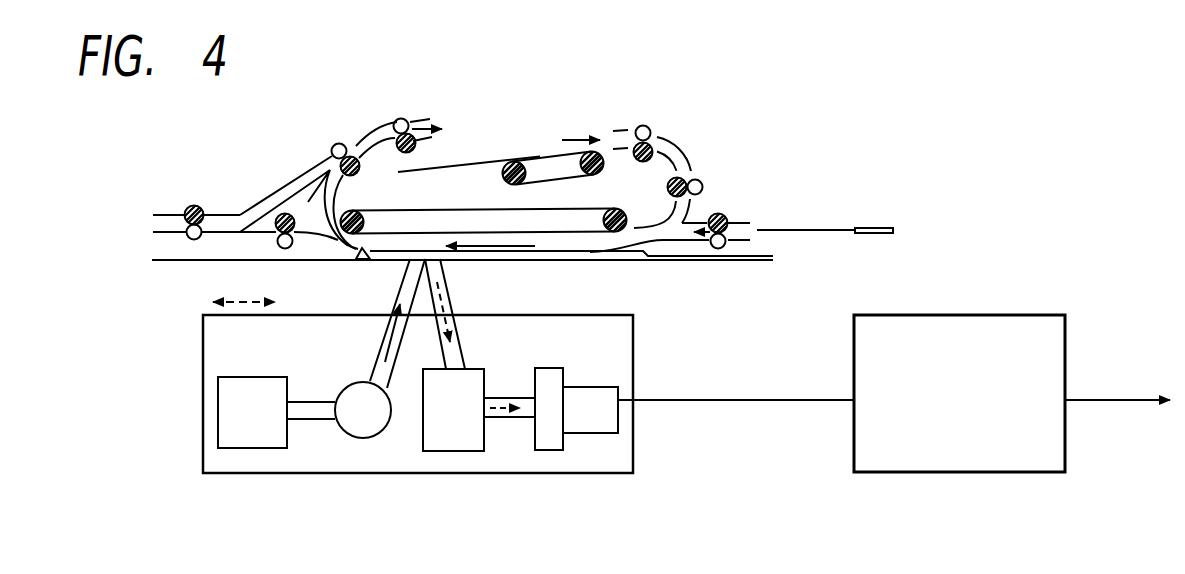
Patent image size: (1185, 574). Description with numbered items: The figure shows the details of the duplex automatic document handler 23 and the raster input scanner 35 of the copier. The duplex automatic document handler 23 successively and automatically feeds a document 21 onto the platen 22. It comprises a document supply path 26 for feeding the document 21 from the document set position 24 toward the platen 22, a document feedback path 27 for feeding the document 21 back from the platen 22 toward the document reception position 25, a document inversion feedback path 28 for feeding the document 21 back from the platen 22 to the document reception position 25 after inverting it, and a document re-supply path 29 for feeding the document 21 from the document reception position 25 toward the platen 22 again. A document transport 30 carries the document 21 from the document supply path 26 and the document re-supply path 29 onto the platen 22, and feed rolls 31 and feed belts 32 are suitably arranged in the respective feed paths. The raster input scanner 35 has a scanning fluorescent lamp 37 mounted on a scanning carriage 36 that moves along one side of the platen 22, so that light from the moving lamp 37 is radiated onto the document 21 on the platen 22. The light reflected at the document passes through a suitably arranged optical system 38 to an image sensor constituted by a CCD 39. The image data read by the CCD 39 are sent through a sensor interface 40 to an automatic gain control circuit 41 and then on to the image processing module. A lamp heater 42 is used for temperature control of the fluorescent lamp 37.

The document 21 is at (848, 228).
The platen 22 is at (535, 260).
The duplex automatic document handler 23 is at (718, 150).
The document set position 24 is at (818, 240).
The document reception position 25 is at (483, 148).
The document supply path 26 is at (745, 220).
The document feedback path 27 is at (307, 190).
The document inversion feedback path 28 is at (267, 227).
The document re-supply path 29 is at (668, 150).
The document transport 30 is at (436, 208).
The feed rolls 31 is at (547, 153).
The feed belts 32 is at (337, 143).
The raster input scanner 35 is at (449, 481).
The scanning carriage 36 is at (308, 447).
The scanning fluorescent lamp 37 is at (346, 384).
The optical system 38 is at (470, 369).
The CCD image sensor 39 is at (545, 368).
The sensor interface 40 is at (597, 387).
The automatic gain control circuit 41 is at (967, 473).
The lamp heater 42 is at (253, 377).